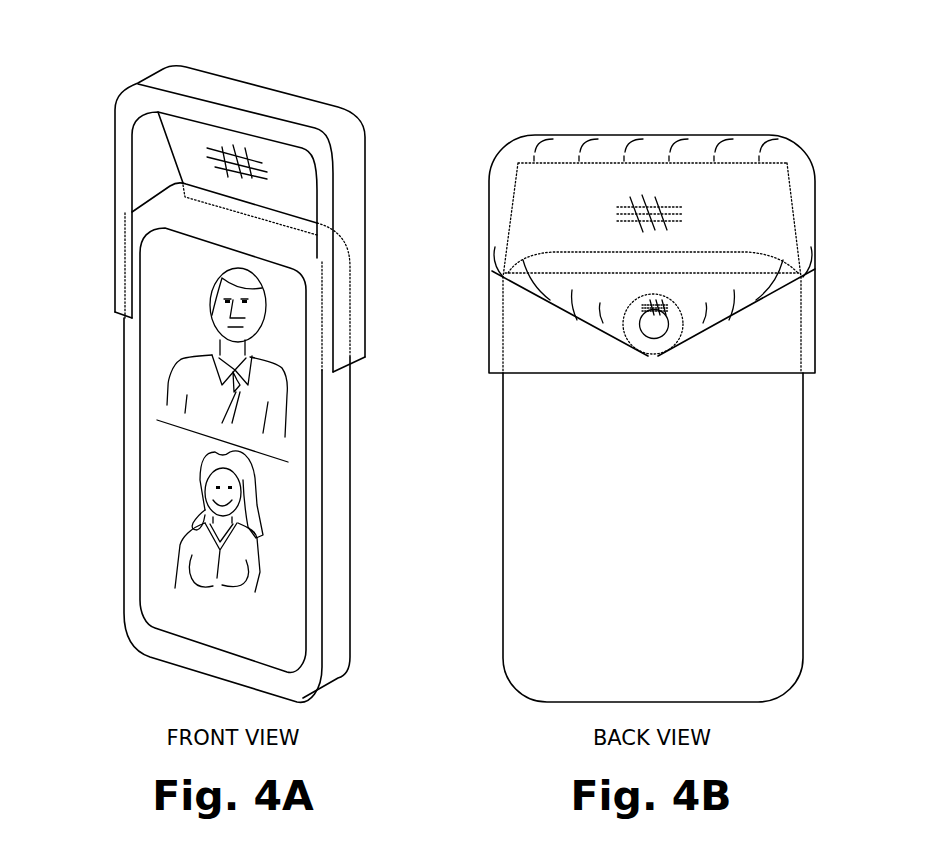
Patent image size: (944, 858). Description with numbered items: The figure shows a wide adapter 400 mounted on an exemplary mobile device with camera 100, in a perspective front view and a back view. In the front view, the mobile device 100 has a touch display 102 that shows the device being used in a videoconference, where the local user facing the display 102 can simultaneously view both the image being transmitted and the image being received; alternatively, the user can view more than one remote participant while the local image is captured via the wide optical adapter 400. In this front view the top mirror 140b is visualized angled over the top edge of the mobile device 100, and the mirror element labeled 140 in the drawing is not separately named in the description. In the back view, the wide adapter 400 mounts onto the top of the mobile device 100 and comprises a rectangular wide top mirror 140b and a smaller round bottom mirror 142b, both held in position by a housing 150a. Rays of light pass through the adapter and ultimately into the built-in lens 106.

In FIG. 4A, the mobile device with camera 100 is at (350, 473).
In FIG. 4B, the mobile device with camera 100 is at (803, 475).
In FIG. 4A, the touch display 102 is at (140, 552).
In FIG. 4B, the built-in lens 106 is at (663, 333).
In FIG. 4A, the flap 140 is at (200, 142).
In FIG. 4B, the wide top mirror 140b is at (535, 208).
In FIG. 4B, the round bottom mirror 142b is at (637, 317).
In FIG. 4A, the housing 150a is at (310, 77).
In FIG. 4B, the housing 150a is at (693, 110).
In FIG. 4A, the wide adapter 400 is at (396, 97).
In FIG. 4B, the wide adapter 400 is at (804, 106).